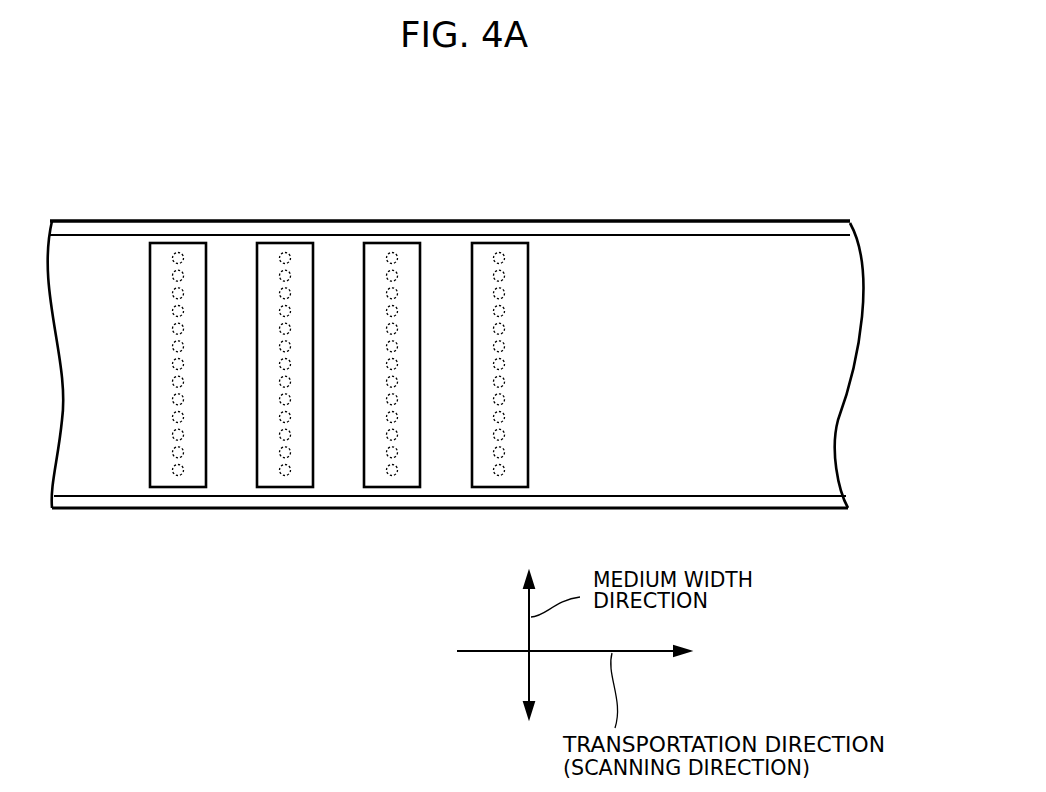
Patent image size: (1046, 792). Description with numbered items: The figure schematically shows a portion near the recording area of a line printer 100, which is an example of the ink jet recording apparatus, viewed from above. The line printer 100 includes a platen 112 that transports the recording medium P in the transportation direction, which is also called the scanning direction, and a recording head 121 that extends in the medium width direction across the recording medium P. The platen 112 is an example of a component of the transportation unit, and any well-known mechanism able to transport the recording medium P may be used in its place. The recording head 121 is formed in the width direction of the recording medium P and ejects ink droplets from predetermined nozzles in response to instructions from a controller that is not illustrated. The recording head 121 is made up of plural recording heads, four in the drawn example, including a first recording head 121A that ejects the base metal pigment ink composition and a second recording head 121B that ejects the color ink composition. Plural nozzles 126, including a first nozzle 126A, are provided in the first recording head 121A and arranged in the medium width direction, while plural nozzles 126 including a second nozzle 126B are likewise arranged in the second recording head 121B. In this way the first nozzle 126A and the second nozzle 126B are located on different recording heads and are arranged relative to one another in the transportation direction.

The recording medium P is at (95, 255).
The line printer 100 is at (718, 138).
The platen 112 is at (815, 230).
The recording head 121 is at (336, 305).
The first recording head 121A is at (207, 233).
The second recording head 121B is at (281, 324).
The nozzles 126 is at (336, 429).
The first nozzle 126A is at (177, 476).
The second nozzle 126B is at (284, 476).